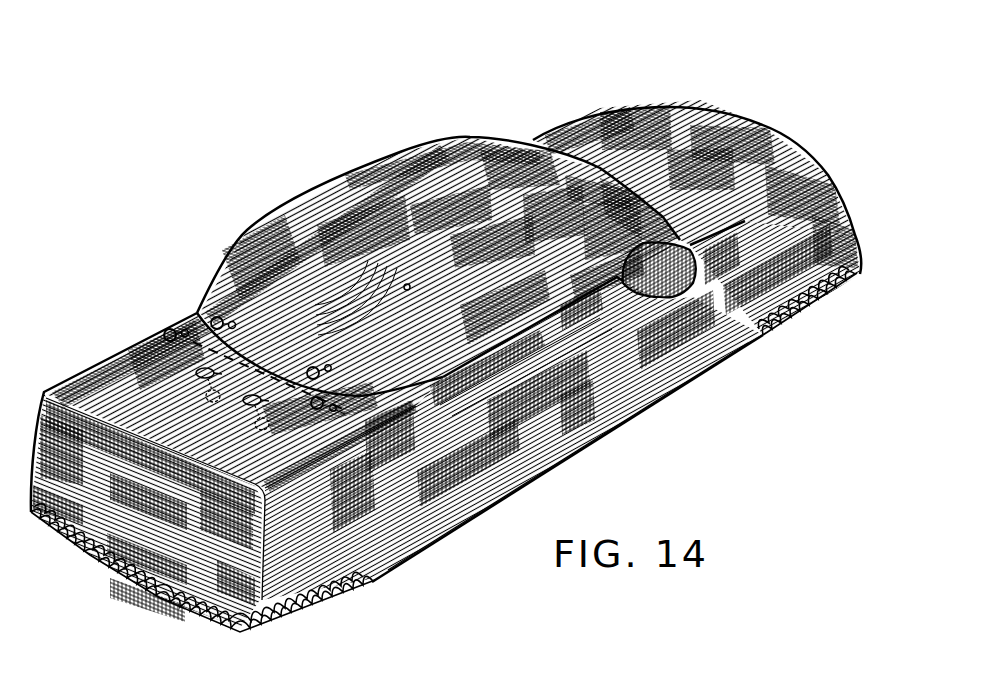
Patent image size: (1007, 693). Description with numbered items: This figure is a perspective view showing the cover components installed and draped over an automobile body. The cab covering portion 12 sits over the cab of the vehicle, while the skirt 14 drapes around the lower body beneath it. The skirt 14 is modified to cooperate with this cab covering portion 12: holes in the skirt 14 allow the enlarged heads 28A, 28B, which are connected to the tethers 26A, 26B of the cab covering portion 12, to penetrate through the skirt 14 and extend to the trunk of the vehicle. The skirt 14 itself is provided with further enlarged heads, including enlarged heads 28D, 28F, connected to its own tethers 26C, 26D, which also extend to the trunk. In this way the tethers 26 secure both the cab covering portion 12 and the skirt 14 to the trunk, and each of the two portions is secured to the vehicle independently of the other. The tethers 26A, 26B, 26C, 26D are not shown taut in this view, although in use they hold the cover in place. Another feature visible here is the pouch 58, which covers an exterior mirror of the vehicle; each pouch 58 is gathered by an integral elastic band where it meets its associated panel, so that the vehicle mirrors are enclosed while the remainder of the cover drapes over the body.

The cab covering portion 12 is at (415, 148).
The skirt 14 is at (560, 457).
The tethers 26 is at (220, 381).
The tether 26A is at (378, 412).
The tether 26B is at (230, 318).
The tether 26C is at (180, 326).
The tether 26D is at (270, 403).
The enlarged head 28A is at (212, 316).
The enlarged head 28B is at (307, 368).
The enlarged head 28D is at (164, 326).
The enlarged head 28F is at (407, 287).
The pouch 58 is at (693, 295).